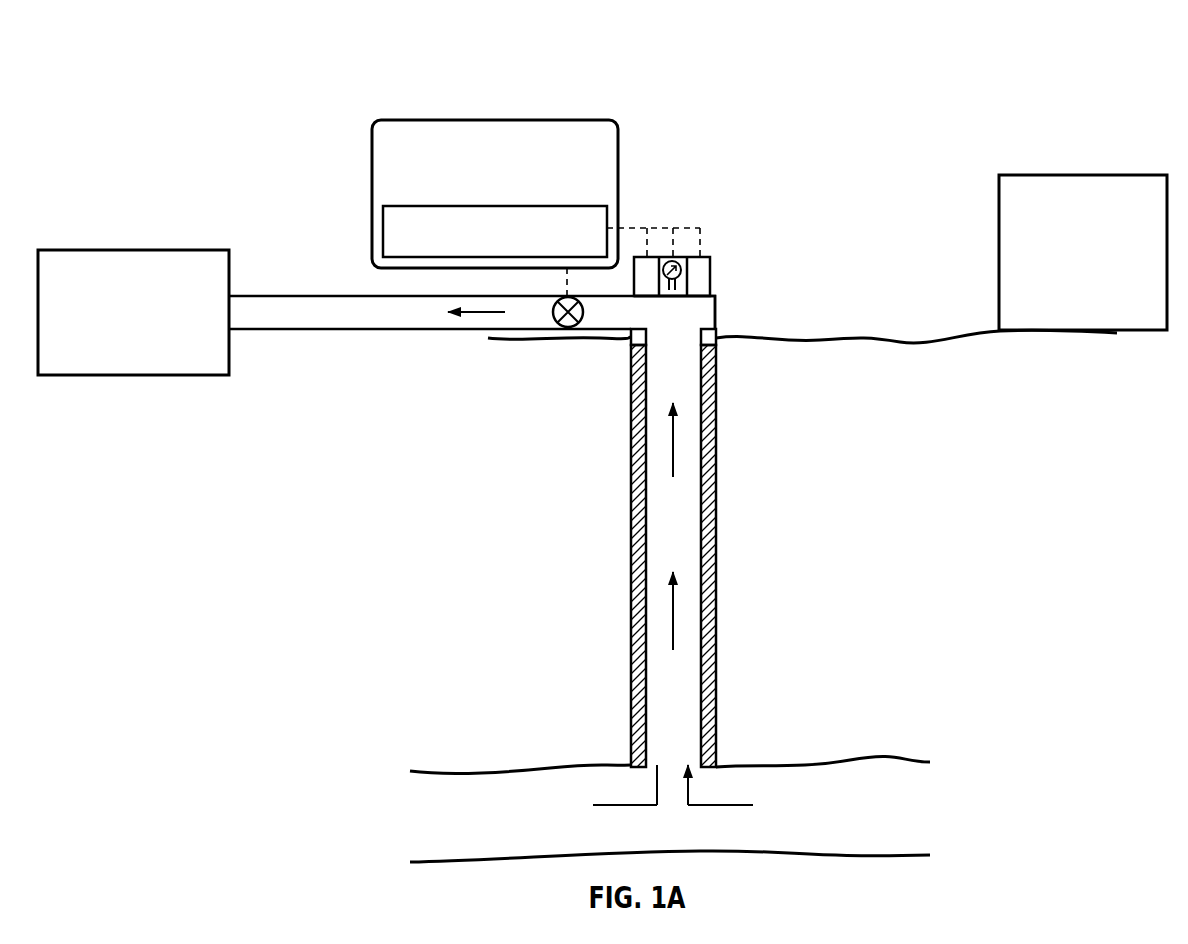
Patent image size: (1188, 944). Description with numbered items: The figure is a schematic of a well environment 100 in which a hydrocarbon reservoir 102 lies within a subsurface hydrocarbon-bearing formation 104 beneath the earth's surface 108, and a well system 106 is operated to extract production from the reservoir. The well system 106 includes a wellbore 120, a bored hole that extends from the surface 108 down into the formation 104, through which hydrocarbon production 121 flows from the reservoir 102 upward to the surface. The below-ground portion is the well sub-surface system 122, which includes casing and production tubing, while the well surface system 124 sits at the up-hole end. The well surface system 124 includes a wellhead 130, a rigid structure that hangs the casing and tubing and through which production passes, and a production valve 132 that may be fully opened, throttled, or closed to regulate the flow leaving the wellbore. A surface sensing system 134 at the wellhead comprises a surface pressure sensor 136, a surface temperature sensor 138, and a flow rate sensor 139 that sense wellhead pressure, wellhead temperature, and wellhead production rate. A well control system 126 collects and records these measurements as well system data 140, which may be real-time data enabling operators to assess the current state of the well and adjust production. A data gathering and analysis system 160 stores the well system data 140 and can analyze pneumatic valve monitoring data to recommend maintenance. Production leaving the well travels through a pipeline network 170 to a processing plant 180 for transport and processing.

The well environment 100 is at (928, 40).
The hydrocarbon reservoir 102 is at (883, 825).
The hydrocarbon-bearing formation 104 is at (905, 590).
The well system 106 is at (455, 66).
The surface 108 is at (895, 351).
The wellbore 120 is at (721, 531).
The production 121 is at (466, 318).
The well sub-surface system 122 is at (626, 601).
The well surface system 124 is at (861, 143).
The well control system 126 is at (420, 119).
The wellhead 130 is at (721, 329).
The production valve 132 is at (566, 330).
The surface sensing system 134 is at (720, 286).
The surface pressure sensor 136 is at (673, 256).
The surface temperature sensor 138 is at (703, 256).
The flow rate sensor 139 is at (648, 256).
The well system data 140 is at (443, 206).
The data gathering and analysis system 160 is at (1100, 175).
The pipeline network 170 is at (292, 293).
The processing plant 180 is at (106, 249).